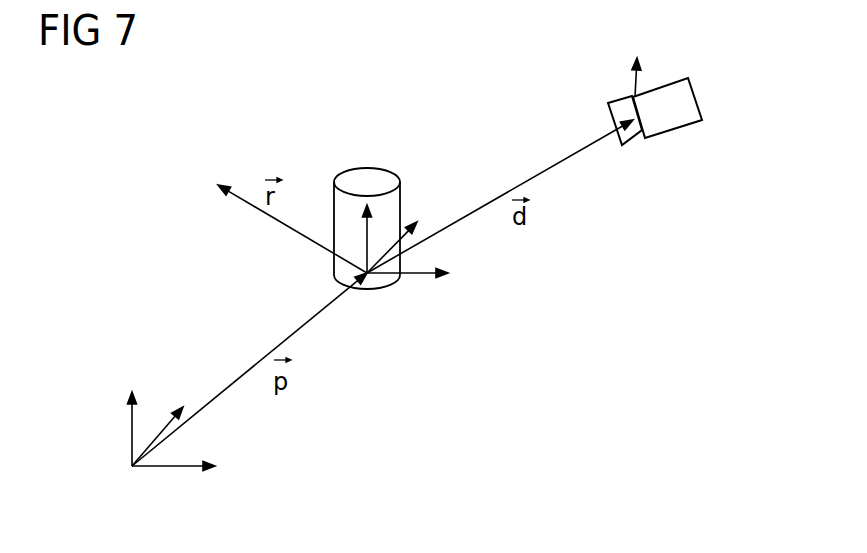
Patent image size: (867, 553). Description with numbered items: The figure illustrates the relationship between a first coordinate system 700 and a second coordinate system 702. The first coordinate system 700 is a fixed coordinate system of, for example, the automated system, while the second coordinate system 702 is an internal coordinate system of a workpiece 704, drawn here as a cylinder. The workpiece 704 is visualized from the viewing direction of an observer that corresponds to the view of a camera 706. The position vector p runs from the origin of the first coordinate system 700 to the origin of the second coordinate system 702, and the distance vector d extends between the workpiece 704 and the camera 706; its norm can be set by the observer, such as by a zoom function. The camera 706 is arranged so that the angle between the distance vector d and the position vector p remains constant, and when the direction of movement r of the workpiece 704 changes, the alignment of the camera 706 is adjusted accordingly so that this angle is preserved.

The first coordinate system 700 is at (114, 432).
The second coordinate system 702 is at (422, 295).
The workpiece 704 is at (365, 178).
The camera 706 is at (663, 126).